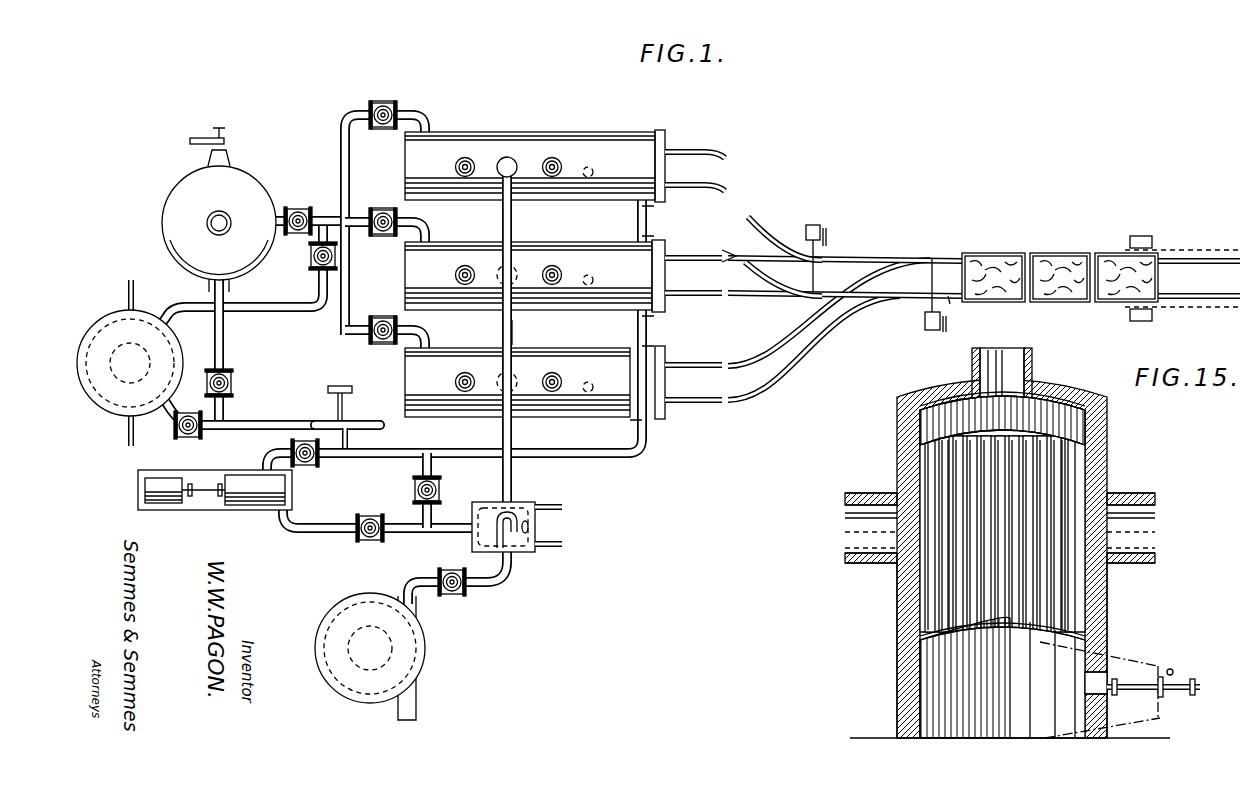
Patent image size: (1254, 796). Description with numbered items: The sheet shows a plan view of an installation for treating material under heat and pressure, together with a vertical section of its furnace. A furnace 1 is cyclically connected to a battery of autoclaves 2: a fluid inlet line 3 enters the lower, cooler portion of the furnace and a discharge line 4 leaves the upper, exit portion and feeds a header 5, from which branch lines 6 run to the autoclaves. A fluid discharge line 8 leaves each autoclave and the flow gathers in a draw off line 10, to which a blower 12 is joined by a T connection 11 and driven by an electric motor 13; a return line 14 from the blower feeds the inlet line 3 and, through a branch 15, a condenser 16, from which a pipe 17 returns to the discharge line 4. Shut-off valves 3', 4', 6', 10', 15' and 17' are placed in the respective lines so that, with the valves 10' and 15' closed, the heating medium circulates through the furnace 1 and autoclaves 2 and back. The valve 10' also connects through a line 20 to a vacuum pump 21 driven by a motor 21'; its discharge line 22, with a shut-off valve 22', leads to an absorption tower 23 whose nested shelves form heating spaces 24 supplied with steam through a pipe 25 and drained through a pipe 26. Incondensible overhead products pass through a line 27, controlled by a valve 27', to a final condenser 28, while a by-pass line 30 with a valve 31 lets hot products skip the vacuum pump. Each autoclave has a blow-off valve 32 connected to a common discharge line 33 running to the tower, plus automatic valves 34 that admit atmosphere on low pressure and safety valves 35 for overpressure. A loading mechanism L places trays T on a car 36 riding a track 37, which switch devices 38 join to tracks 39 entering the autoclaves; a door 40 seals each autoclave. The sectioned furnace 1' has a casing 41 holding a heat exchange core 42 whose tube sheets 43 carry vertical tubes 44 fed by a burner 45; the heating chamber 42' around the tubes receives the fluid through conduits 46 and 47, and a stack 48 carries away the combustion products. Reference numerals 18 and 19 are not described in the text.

In FIG. 1, the furnace 1 is at (211, 210).
In FIG. 1, the autoclaves 2 is at (633, 131).
In FIG. 1, the fluid inlet line 3 is at (237, 351).
In FIG. 1, the shut-off valve 3' is at (231, 374).
In FIG. 1, the discharge line 4 is at (310, 198).
In FIG. 1, the shut-off valve 4' is at (298, 208).
In FIG. 1, the header 5 is at (343, 130).
In FIG. 1, the branch lines 6 is at (393, 214).
In FIG. 1, the shut-off valves 6' is at (391, 205).
In FIG. 1, the fluid discharge line 8 is at (647, 210).
In FIG. 1, the draw off line 10 is at (462, 436).
In FIG. 1, the shut-off valve 10' is at (312, 461).
In FIG. 1, the T connection 11 is at (375, 445).
In FIG. 1, the blower 12 is at (310, 412).
In FIG. 1, the electric motor 13 is at (345, 388).
In FIG. 1, the return line 14 is at (262, 410).
In FIG. 1, the branch 15 is at (169, 426).
In FIG. 1, the shut-off valve 15' is at (196, 435).
In FIG. 1, the condenser 16 is at (118, 312).
In FIG. 1, the pipe 17 is at (241, 273).
In FIG. 1, the shut-off valve 17' is at (308, 254).
In FIG. 1, the pipe 18 is at (128, 440).
In FIG. 1, the pipe 19 is at (135, 298).
In FIG. 1, the line 20 is at (264, 460).
In FIG. 1, the vacuum pump 21 is at (215, 504).
In FIG. 1, the motor 21' is at (161, 505).
In FIG. 1, the line 22 is at (377, 539).
In FIG. 1, the shut-off valve 22' is at (370, 544).
In FIG. 1, the absorption tower 23 is at (540, 527).
In FIG. 1, the heating spaces 24 is at (522, 500).
In FIG. 1, the pipe 25 is at (560, 506).
In FIG. 1, the pipe 26 is at (560, 547).
In FIG. 1, the line 27 is at (474, 577).
In FIG. 1, the valve 27' is at (468, 594).
In FIG. 1, the final condenser 28 is at (430, 648).
In FIG. 1, the by-pass line 30 is at (436, 472).
In FIG. 1, the valve 31 is at (442, 490).
In FIG. 1, the blow-off valve 32 is at (516, 164).
In FIG. 1, the common discharge line 33 is at (515, 336).
In FIG. 1, the automatic valves 34 is at (470, 162).
In FIG. 1, the safety valves 35 is at (562, 164).
In FIG. 1, the car 36 is at (945, 258).
In FIG. 1, the track 37 is at (952, 300).
In FIG. 1, the switch devices 38 is at (823, 247).
In FIG. 1, the tracks 39 is at (700, 150).
In FIG. 1, the door 40 is at (682, 150).
In FIG. 1, the trays T is at (1000, 255).
In FIG. 1, the loading mechanism L is at (1200, 250).
In FIG. 15, the furnace 1' is at (976, 559).
In FIG. 15, the casing 41 is at (897, 655).
In FIG. 15, the heat exchange core 42 is at (1031, 534).
In FIG. 15, the heating chamber 42' is at (1107, 535).
In FIG. 15, the tube sheets 43 is at (1085, 440).
In FIG. 15, the tubes 44 is at (950, 594).
In FIG. 15, the burner 45 is at (1160, 700).
In FIG. 15, the conduit 46 is at (850, 540).
In FIG. 15, the conduit 47 is at (1150, 522).
In FIG. 15, the stack 48 is at (1032, 356).